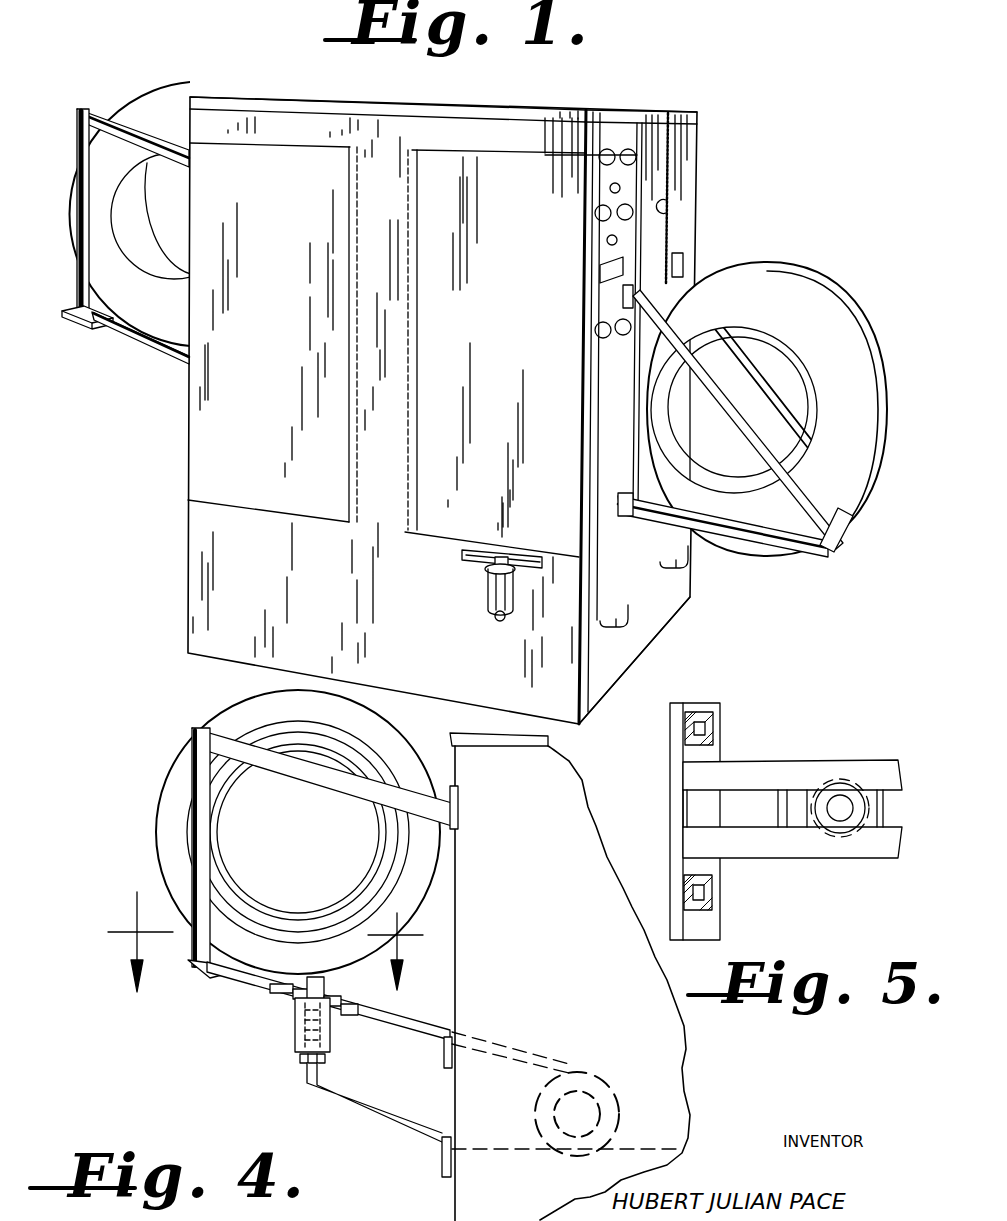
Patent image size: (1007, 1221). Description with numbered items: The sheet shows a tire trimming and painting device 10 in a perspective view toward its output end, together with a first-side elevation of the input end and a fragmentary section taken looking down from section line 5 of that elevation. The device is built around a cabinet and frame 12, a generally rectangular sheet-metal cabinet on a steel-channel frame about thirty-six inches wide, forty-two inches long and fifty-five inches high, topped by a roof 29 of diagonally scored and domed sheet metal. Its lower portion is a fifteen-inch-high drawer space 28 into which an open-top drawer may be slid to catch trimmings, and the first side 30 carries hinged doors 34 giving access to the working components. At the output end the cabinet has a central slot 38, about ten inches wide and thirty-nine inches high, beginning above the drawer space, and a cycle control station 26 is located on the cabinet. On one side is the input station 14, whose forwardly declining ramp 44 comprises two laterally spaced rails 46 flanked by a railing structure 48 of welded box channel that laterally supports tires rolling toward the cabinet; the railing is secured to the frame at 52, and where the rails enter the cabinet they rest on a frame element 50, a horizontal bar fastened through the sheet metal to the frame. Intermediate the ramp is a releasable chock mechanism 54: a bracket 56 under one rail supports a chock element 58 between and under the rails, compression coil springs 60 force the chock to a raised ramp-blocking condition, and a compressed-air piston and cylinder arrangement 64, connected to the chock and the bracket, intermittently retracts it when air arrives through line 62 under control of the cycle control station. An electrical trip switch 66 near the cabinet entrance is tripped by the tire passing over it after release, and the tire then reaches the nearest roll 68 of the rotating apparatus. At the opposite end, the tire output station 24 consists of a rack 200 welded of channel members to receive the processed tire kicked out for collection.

In FIG. 1, the tire trimming and painting device 10 is at (122, 508).
In FIG. 1, the cabinet and frame 12 is at (189, 460).
In FIG. 1, the input station 14 is at (98, 344).
In FIG. 1, the tire output station 24 is at (780, 566).
In FIG. 4, the tire output station 24 is at (298, 832).
In FIG. 1, the cycle control station 26 is at (575, 236).
In FIG. 1, the drawer space 28 is at (652, 622).
In FIG. 4, the drawer space 28 is at (506, 1198).
In FIG. 1, the roof 29 is at (424, 107).
In FIG. 1, the first side 30 is at (189, 588).
In FIG. 4, the first side 30 is at (547, 848).
In FIG. 1, the hinged doors 34 is at (268, 353).
In FIG. 1, the slot 38 is at (668, 205).
In FIG. 4, the ramp 44 is at (420, 1018).
In FIG. 1, the rails 46 is at (178, 343).
In FIG. 5, the rails 46 is at (776, 766).
In FIG. 1, the railing structure 48 is at (77, 153).
In FIG. 4, the railing structure 48 is at (200, 852).
In FIG. 5, the railing structure 48 is at (722, 722).
In FIG. 4, the frame element 50 is at (444, 1058).
In FIG. 4, the railing securement 52 is at (458, 796).
In FIG. 4, the releasable chock mechanism 54 is at (275, 1020).
In FIG. 5, the releasable chock mechanism 54 is at (849, 850).
In FIG. 4, the bracket 56 is at (350, 1014).
In FIG. 4, the chock element 58 is at (328, 982).
In FIG. 4, the compression coil springs 60 is at (295, 1040).
In FIG. 4, the line 62 is at (372, 1112).
In FIG. 4, the piston and cylinder arrangement 64 is at (319, 982).
In FIG. 4, the electrical trip switch 66 is at (470, 1025).
In FIG. 4, the roll 68 is at (534, 1108).
In FIG. 1, the rack 200 is at (821, 558).
In FIG. 4, the section line 5— 5 is at (265, 942).